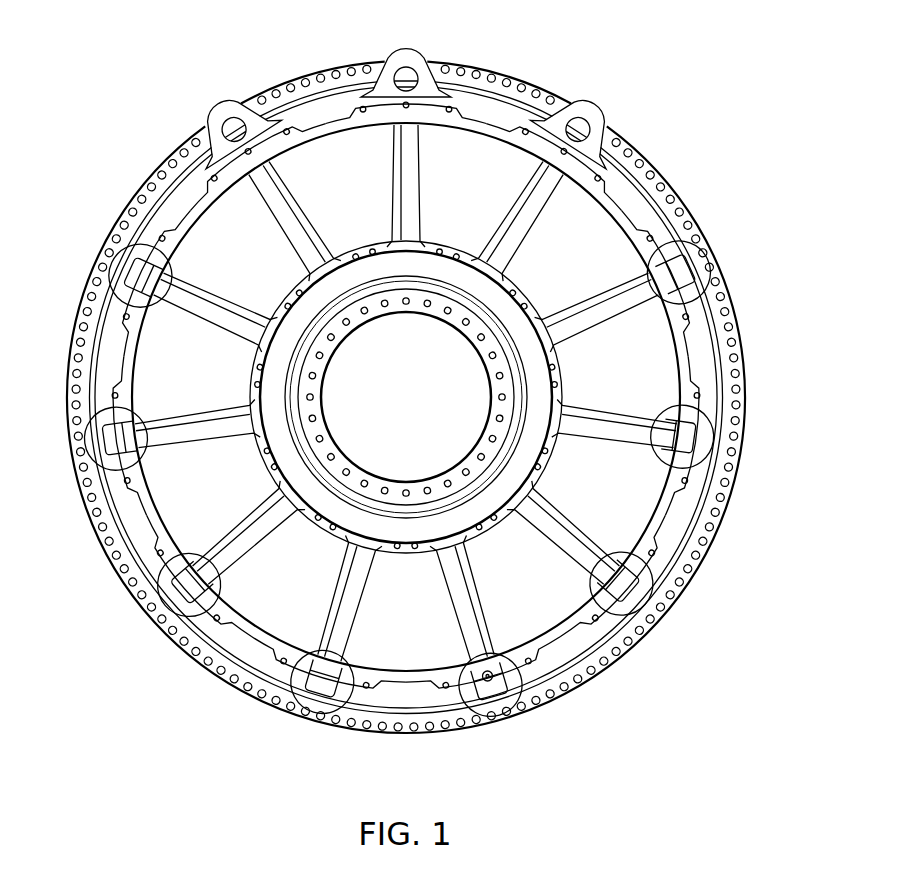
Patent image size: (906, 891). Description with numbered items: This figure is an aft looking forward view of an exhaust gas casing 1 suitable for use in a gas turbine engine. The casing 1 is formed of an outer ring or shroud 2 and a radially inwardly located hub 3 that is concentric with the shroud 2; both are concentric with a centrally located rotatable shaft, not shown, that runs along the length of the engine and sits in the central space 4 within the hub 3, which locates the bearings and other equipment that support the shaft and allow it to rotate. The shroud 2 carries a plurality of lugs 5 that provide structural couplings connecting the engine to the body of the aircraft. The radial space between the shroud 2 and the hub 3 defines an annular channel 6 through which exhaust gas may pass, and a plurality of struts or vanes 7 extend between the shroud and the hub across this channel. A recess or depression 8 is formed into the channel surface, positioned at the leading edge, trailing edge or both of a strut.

The exhaust gas casing 1 is at (715, 162).
The shroud 2 is at (580, 692).
The hub 3 is at (565, 477).
The central space 4 is at (387, 453).
The lugs 5 is at (577, 100).
The annular channel 6 is at (412, 642).
The struts 7 is at (618, 314).
The depression 8 is at (128, 256).